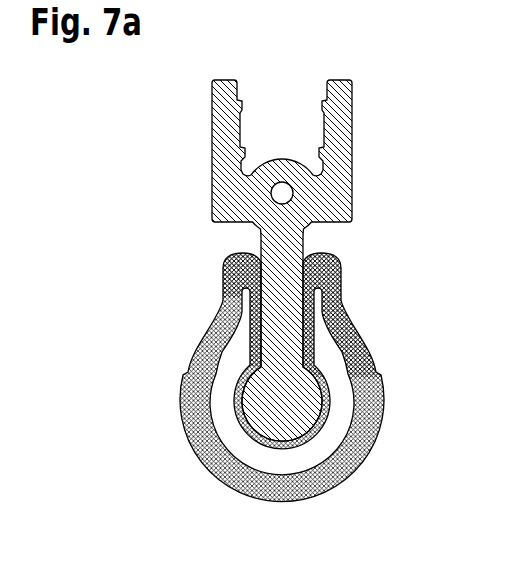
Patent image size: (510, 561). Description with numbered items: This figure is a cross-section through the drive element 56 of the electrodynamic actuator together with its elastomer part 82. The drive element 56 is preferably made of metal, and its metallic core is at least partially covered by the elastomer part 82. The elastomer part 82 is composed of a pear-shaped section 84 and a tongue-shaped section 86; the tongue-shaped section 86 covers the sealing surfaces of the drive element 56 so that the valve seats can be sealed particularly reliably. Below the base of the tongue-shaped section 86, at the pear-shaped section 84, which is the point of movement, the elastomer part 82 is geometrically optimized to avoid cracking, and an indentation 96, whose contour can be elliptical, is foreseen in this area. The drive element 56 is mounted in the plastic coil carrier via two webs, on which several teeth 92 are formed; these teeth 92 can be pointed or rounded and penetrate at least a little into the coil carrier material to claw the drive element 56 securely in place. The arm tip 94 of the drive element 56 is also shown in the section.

The drive element 56 is at (327, 208).
The elastomer part 82 is at (335, 321).
The pear-shaped section 84 is at (193, 406).
The tongue-shaped section 86 is at (253, 320).
The teeth 92 is at (238, 171).
The arm tip 94 is at (241, 109).
The indentation 96 is at (253, 289).